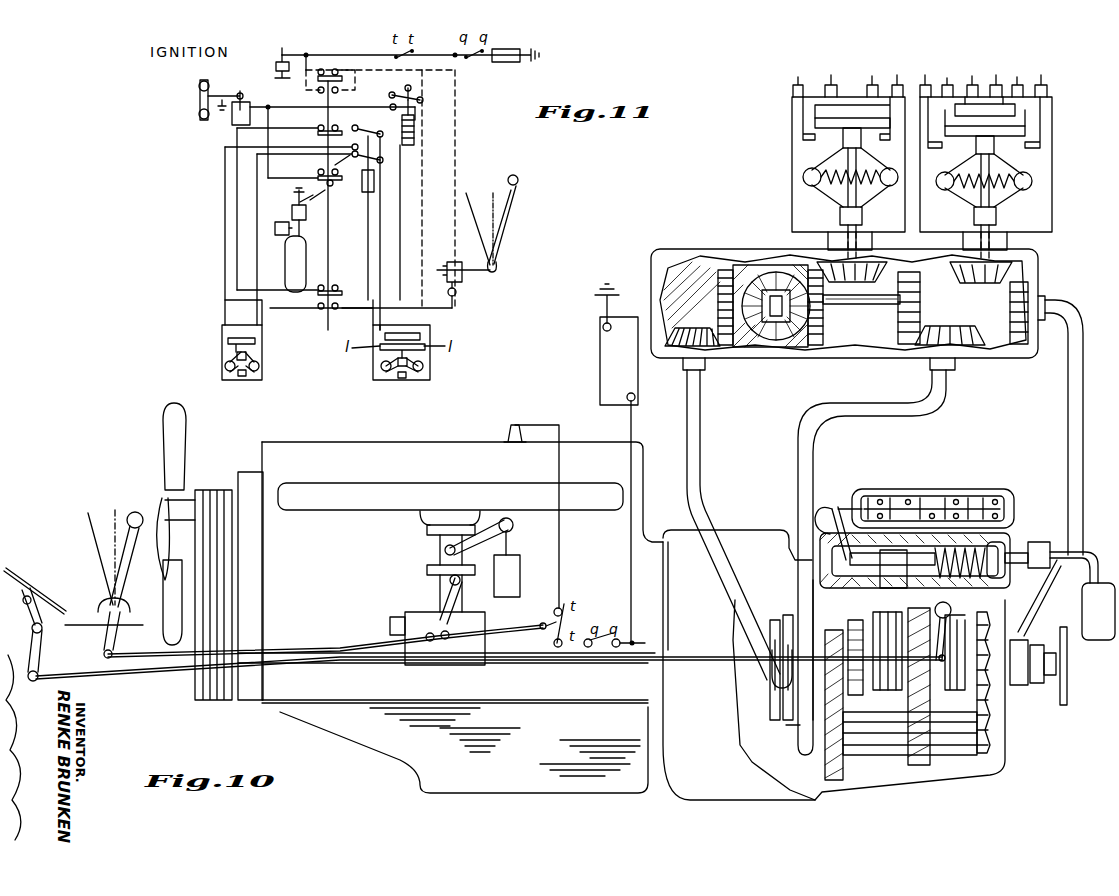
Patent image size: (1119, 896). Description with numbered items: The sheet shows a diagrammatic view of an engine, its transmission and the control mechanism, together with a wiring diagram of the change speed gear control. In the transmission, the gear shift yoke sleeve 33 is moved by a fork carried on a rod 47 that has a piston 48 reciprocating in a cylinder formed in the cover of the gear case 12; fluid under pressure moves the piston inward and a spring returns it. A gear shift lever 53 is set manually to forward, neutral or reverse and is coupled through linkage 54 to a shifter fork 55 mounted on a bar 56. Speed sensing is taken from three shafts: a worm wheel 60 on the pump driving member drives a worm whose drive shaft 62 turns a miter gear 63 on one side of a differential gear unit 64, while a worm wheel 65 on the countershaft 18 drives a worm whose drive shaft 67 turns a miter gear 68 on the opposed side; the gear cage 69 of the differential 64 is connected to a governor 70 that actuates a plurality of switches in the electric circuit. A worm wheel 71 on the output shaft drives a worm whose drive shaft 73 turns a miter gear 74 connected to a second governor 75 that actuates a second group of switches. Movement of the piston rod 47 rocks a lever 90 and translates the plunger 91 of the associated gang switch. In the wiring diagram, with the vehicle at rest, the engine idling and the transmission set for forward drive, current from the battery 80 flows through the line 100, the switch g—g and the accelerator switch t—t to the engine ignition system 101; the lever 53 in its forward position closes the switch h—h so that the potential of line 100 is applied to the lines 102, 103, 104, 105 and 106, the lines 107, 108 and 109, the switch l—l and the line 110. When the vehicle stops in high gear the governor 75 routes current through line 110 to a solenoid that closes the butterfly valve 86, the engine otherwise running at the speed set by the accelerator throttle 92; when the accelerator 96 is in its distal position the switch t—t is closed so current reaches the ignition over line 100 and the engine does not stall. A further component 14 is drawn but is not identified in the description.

In FIG. 11, the line 100 is at (322, 56).
In FIG. 11, the engine ignition system 101 is at (274, 69).
In FIG. 11, the line 102 is at (456, 125).
In FIG. 11, the line 103 is at (397, 71).
In FIG. 11, the line 104 is at (338, 91).
In FIG. 11, the line 105 is at (314, 82).
In FIG. 11, the line 106 is at (304, 64).
In FIG. 11, the line 107 is at (458, 306).
In FIG. 11, the line 108 is at (420, 320).
In FIG. 11, the line 109 is at (439, 189).
In FIG. 11, the line 110 is at (372, 310).
In FIG. 11, the butterfly valve 86 is at (200, 103).
In FIG. 11, the battery 80 is at (498, 62).
In FIG. 10, the battery 80 is at (600, 366).
In FIG. 11, the governor 70 is at (258, 368).
In FIG. 10, the governor 70 is at (803, 177).
In FIG. 11, the governor 75 is at (444, 370).
In FIG. 10, the governor 75 is at (1032, 183).
In FIG. 11, the gear shift lever 53 is at (513, 200).
In FIG. 10, the gear shift lever 53 is at (138, 577).
In FIG. 10, the accelerator 96 is at (22, 566).
In FIG. 10, the linkage 54 is at (662, 661).
In FIG. 10, the accelerator throttle 92 is at (437, 587).
In FIG. 10, the miter gear 63 is at (690, 335).
In FIG. 10, the differential gear unit 64 is at (762, 345).
In FIG. 10, the gear cage 69 is at (830, 310).
In FIG. 10, the miter gear 68 is at (930, 312).
In FIG. 10, the miter gear 74 is at (1025, 345).
In FIG. 10, the drive shaft 62 is at (706, 524).
In FIG. 10, the drive shaft 67 is at (802, 490).
In FIG. 10, the drive shaft 73 is at (1066, 470).
In FIG. 10, the gear case 12 is at (998, 785).
In FIG. 10, the countershaft 18 is at (870, 740).
In FIG. 10, the shifter fork 55 is at (962, 620).
In FIG. 10, the bar 56 is at (935, 606).
In FIG. 10, the clutch disc 14 is at (826, 628).
In FIG. 10, the gear shift yoke sleeve 33 is at (868, 622).
In FIG. 10, the worm wheel 60 is at (790, 700).
In FIG. 10, the worm wheel 65 is at (787, 730).
In FIG. 10, the rod 47 is at (812, 545).
In FIG. 10, the piston 48 is at (1010, 525).
In FIG. 10, the plunger 91 is at (935, 497).
In FIG. 10, the lever 90 is at (840, 506).
In FIG. 10, the worm wheel 71 is at (1030, 690).